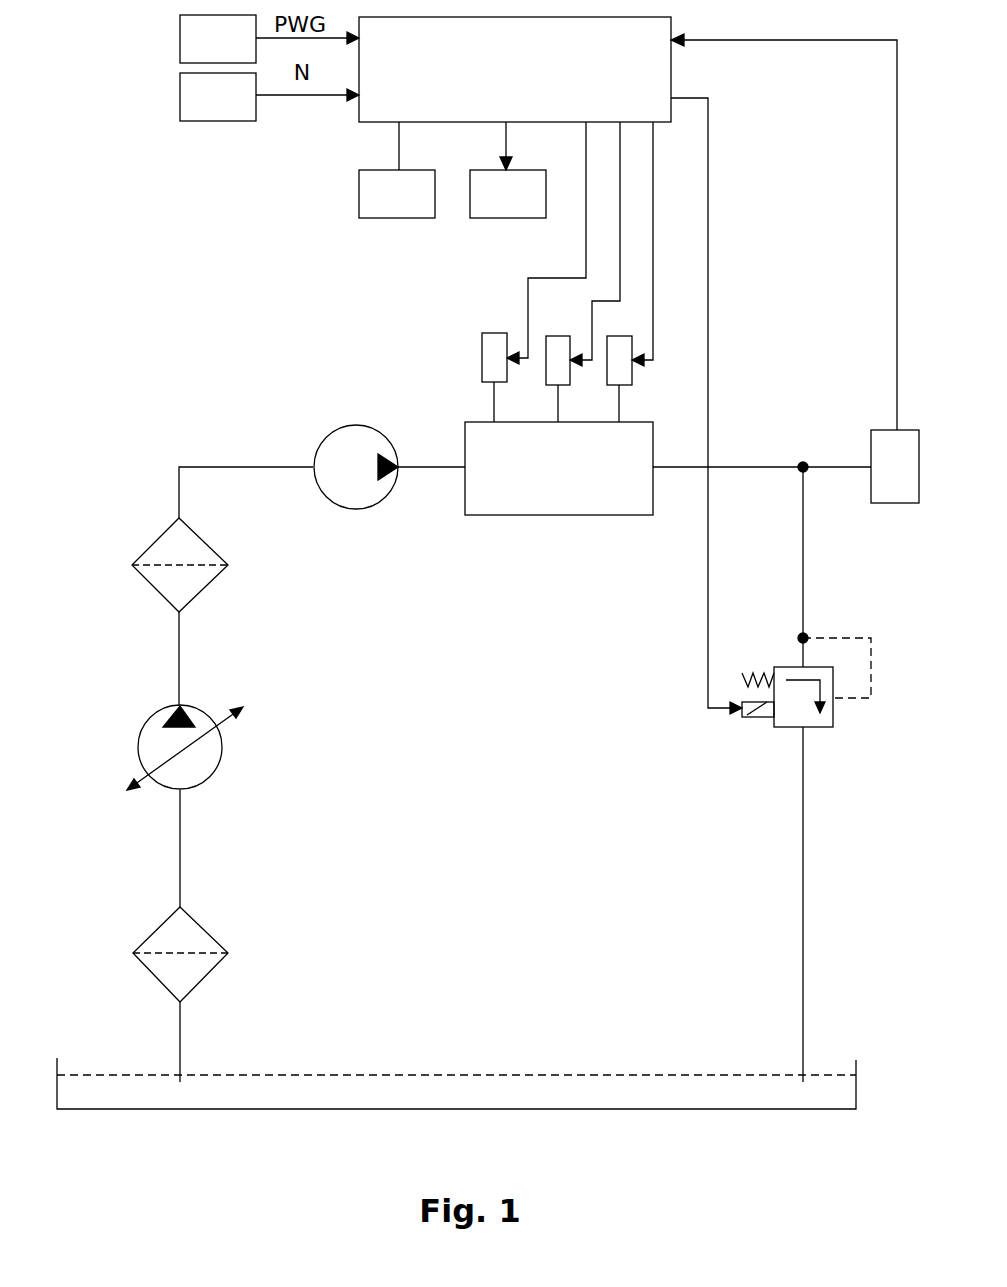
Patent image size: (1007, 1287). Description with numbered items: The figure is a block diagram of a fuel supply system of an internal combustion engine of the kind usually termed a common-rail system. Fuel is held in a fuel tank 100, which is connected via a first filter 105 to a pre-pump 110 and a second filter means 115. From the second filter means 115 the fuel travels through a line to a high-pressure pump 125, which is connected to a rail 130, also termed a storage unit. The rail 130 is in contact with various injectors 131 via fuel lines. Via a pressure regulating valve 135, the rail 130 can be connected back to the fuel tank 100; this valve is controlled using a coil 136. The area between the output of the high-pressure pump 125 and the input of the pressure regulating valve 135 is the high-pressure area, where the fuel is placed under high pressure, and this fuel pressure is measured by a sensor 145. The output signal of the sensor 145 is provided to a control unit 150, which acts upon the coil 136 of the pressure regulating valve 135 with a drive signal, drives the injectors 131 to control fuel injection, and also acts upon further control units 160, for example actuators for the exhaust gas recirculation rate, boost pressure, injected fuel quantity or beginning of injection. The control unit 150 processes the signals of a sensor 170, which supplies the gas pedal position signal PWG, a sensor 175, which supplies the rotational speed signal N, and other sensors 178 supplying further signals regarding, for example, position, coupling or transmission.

The fuel tank 100 is at (377, 1108).
The first filter 105 is at (165, 933).
The pre-pump 110 is at (163, 742).
The second filter means 115 is at (172, 545).
The high-pressure pump 125 is at (365, 452).
The rail 130 is at (559, 468).
The injectors 131 is at (530, 377).
The pressure regulating valve 135 is at (808, 717).
The coil 136 is at (767, 718).
The sensor 145 is at (895, 455).
The control unit 150 is at (515, 69).
The further control units 160 is at (508, 170).
The sensor 170 is at (218, 39).
The sensor 175 is at (218, 97).
The other sensors 178 is at (397, 170).